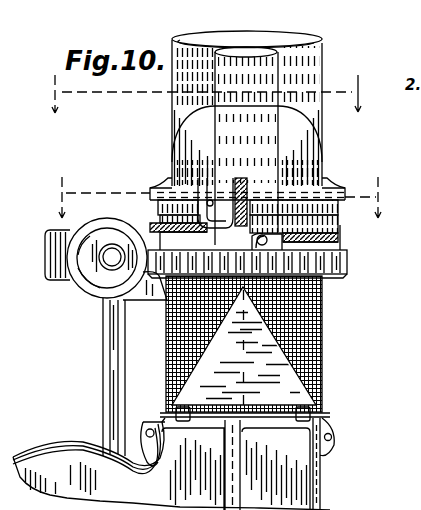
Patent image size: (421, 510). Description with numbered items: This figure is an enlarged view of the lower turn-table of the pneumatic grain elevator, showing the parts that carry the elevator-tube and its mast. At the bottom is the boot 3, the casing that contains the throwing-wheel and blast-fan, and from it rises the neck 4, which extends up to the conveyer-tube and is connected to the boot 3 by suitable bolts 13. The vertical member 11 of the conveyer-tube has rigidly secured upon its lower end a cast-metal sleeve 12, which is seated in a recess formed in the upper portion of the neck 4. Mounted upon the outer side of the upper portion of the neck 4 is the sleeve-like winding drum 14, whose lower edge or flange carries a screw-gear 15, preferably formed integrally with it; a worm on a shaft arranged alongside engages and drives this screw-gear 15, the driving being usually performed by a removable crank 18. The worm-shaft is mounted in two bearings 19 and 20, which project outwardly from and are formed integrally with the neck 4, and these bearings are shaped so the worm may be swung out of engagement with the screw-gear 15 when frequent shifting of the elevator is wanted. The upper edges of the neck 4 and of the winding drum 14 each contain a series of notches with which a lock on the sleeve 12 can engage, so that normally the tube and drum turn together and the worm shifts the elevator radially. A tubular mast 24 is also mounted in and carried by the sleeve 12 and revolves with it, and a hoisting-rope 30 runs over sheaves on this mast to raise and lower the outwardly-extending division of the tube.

The boot 3 is at (300, 473).
The neck 4 is at (322, 342).
The vertical member 11 is at (322, 130).
The cast-metal sleeve 12 is at (172, 158).
The bolts 13 is at (186, 406).
The winding drum 14 is at (380, 256).
The screw-gear 15 is at (338, 274).
The removable crank 18 is at (104, 378).
The bearing 19 is at (97, 287).
The bearing 20 is at (57, 282).
The tubular mast 24 is at (226, 98).
The hoisting-rope 30 is at (162, 215).